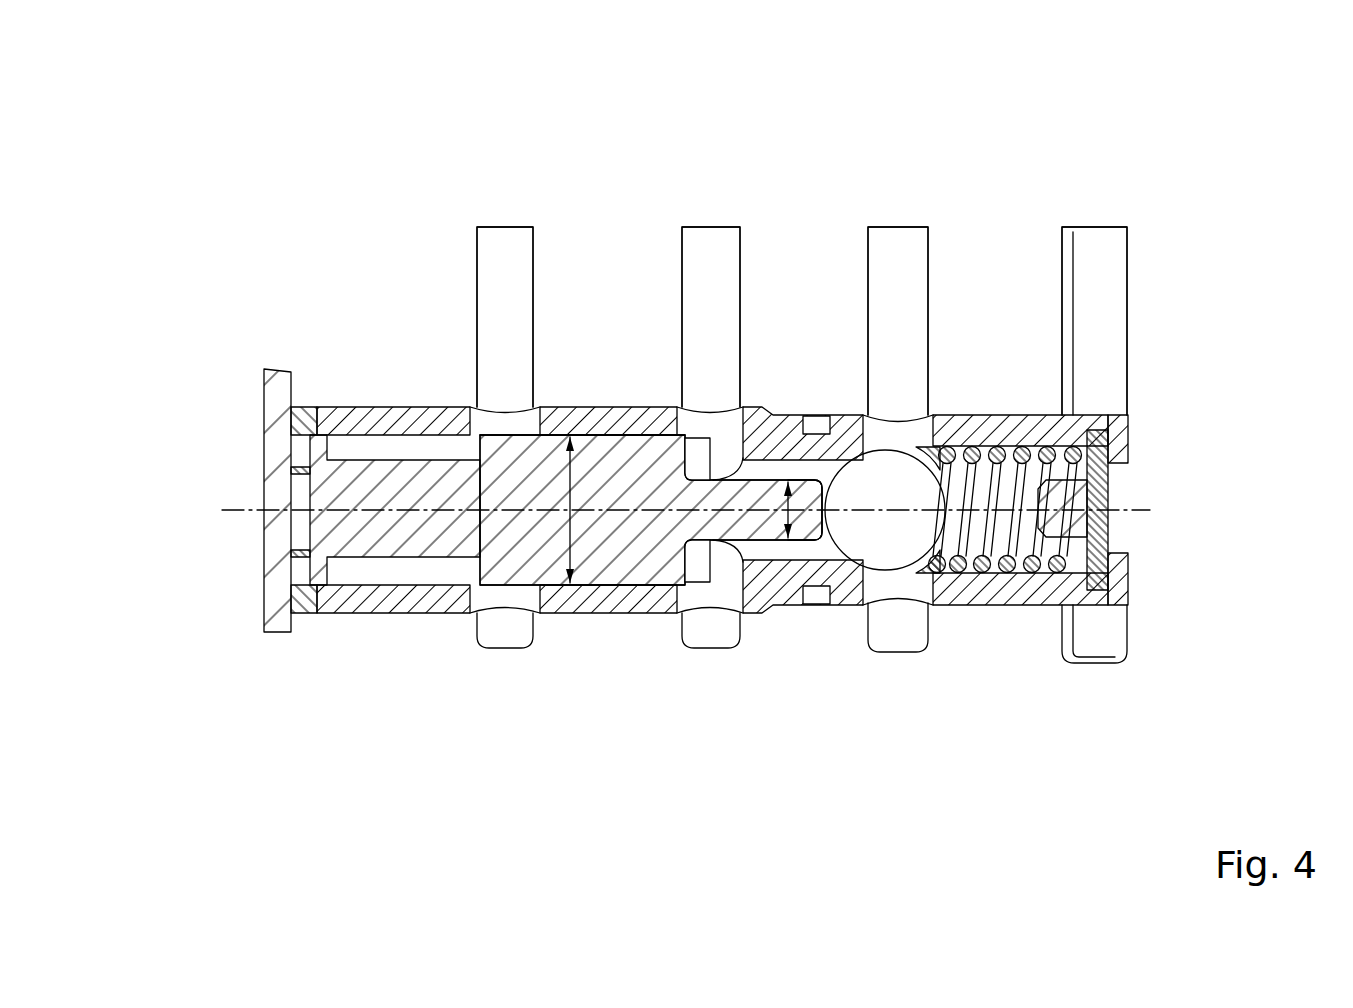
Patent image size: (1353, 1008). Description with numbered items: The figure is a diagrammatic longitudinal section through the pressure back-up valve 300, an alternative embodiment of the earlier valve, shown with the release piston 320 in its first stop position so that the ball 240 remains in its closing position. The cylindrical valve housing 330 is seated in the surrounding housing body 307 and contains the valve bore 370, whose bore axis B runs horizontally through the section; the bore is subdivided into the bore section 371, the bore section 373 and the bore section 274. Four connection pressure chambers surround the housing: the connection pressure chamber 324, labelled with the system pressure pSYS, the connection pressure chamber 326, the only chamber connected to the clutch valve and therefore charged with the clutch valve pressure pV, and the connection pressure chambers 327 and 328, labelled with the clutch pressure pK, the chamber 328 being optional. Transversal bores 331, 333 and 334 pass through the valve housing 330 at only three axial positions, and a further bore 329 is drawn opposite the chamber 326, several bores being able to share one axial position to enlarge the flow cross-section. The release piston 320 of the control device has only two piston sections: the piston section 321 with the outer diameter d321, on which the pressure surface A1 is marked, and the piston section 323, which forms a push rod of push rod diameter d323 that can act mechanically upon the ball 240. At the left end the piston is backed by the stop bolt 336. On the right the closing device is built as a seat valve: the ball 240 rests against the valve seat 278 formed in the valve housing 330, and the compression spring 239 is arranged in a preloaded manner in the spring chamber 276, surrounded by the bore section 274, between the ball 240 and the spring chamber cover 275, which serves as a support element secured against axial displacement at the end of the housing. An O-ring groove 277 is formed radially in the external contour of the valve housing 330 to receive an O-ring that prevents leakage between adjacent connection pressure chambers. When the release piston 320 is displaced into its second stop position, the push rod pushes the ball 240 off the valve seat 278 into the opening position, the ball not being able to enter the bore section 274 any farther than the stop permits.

The pressure back-up valve 300 is at (280, 228).
The release piston 320 is at (500, 425).
The connection pressure chamber 324 is at (508, 270).
The bore section 371 is at (610, 443).
The connection pressure chamber 326 is at (712, 270).
The piston section 323 is at (757, 497).
The bore section 373 is at (778, 460).
The O-ring groove 277 is at (818, 428).
The connection pressure chamber 327 is at (900, 262).
The housing 307 is at (993, 330).
The connection pressure chamber 328 is at (1095, 265).
The valve housing 330 is at (407, 407).
The valve bore 370 is at (407, 440).
The pressure surface A1 is at (470, 488).
The bore axis B is at (252, 510).
The stop bolt 336 is at (370, 530).
The bore section 274 is at (1037, 447).
The spring chamber cover 275 is at (1087, 495).
The spring chamber 276 is at (1042, 553).
The compression spring 239 is at (1080, 592).
The transversal bore 331 is at (510, 593).
The outer diameter of the piston section 321 d321 is at (597, 545).
The piston section 321 is at (637, 553).
The port 329 is at (705, 565).
The transversal bore 333 is at (724, 593).
The push rod diameter d323 is at (812, 520).
The valve seat 278 is at (845, 603).
The connection bore 334 is at (898, 528).
The ball 240 is at (920, 557).
The system pressure pSYS is at (520, 220).
The clutch valve pressure pV is at (697, 220).
The clutch pressure pK is at (997, 224).